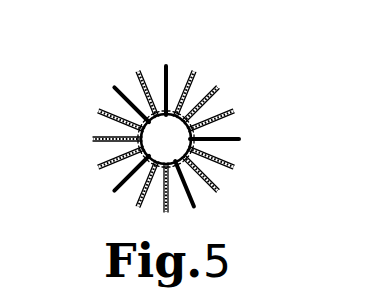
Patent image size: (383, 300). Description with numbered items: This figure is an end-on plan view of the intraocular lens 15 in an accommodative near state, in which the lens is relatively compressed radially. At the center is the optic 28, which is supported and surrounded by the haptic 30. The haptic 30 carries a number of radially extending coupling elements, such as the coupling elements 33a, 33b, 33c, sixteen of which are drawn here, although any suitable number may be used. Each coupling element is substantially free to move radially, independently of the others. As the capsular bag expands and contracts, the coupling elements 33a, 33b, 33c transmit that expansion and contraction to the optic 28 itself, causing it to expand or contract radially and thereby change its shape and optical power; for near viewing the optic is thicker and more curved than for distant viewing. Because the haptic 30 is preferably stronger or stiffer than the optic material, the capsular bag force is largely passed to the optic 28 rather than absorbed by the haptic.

The intraocular lens 15 is at (175, 119).
The optic 28 is at (117, 171).
The haptic 30 is at (196, 76).
The coupling element 33a is at (234, 112).
The coupling element 33b is at (238, 142).
The coupling element 33c is at (218, 164).